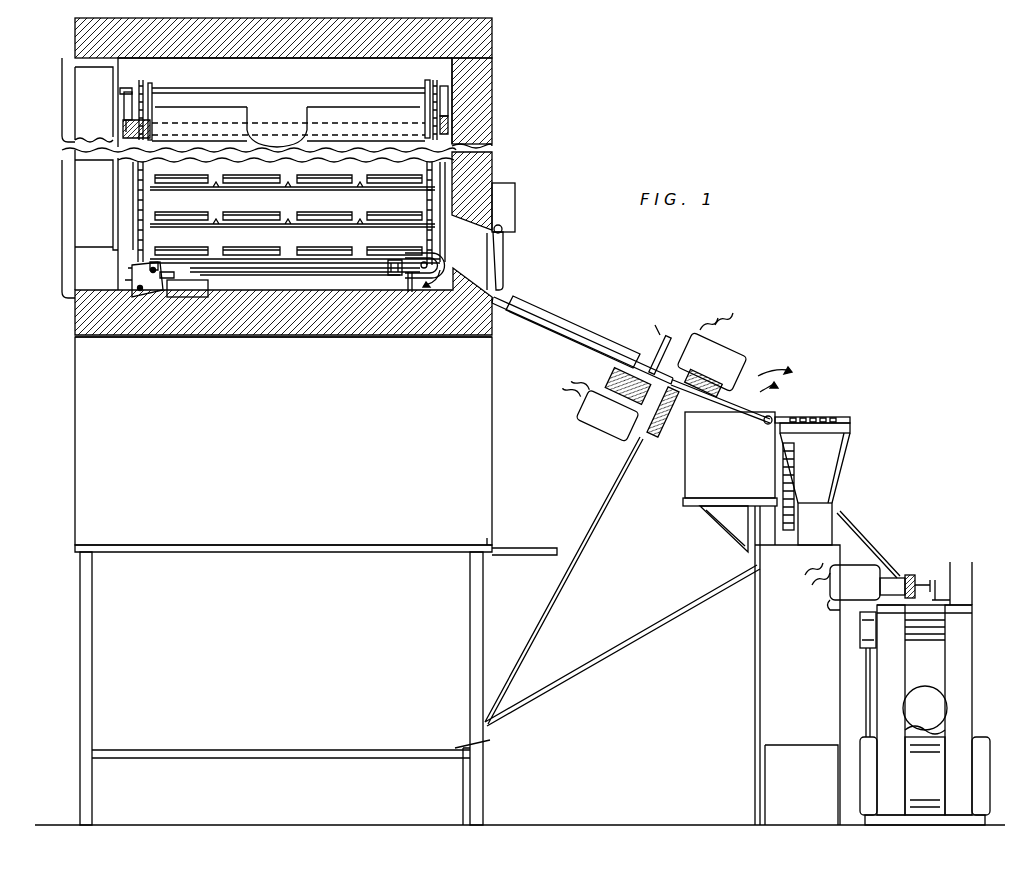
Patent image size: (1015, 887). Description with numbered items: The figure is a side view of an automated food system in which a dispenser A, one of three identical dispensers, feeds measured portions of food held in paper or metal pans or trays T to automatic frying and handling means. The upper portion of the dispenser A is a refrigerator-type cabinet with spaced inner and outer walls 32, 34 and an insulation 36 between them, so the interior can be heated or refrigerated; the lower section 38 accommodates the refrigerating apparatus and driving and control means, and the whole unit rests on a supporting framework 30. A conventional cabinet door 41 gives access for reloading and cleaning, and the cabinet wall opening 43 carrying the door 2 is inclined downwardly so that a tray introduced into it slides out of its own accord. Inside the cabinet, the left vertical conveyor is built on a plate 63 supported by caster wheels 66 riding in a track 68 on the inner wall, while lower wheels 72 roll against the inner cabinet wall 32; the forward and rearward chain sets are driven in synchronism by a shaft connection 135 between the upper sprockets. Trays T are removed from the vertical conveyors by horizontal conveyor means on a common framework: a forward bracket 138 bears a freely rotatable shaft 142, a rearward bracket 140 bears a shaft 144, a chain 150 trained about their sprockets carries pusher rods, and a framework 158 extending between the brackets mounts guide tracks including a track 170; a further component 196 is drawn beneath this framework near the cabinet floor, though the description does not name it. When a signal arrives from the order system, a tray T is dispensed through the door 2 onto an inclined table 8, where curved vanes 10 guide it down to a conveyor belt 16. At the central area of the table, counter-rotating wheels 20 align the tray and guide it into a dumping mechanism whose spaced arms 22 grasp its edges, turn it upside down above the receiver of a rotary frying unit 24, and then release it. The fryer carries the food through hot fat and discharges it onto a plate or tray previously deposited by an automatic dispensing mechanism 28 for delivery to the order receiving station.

The door 2 is at (526, 254).
The inclined table 8 is at (552, 328).
The curved vanes 10 is at (563, 320).
The conveyor belt 16 is at (659, 360).
The counter-rotating wheels 20 is at (745, 384).
The spaced arms 22 is at (749, 419).
The rotary frying unit 24 is at (858, 457).
The automatic dispensing mechanism 28 is at (947, 552).
The supporting framework 30 is at (92, 645).
The inner wall 32 is at (380, 60).
The outer wall 34 is at (492, 68).
The insulation 36 is at (482, 95).
The lower section 38 is at (80, 415).
The door 41 is at (0, 97).
The cabinet wall opening 43 is at (504, 274).
The plate 63 is at (328, 106).
The caster wheels 66 is at (125, 116).
The track 68 is at (267, 126).
The wheels 72 is at (128, 233).
The shaft connection 135 is at (225, 90).
The forward bracket 138 is at (126, 283).
The rearward bracket 140 is at (406, 290).
The shaft 142 is at (156, 256).
The shaft 144 is at (358, 240).
The chain 150 is at (268, 252).
The framework 158 is at (248, 276).
The track 170 is at (300, 276).
The actuator box 196 is at (190, 292).
The dispenser A is at (529, 116).
The tray T is at (320, 188).